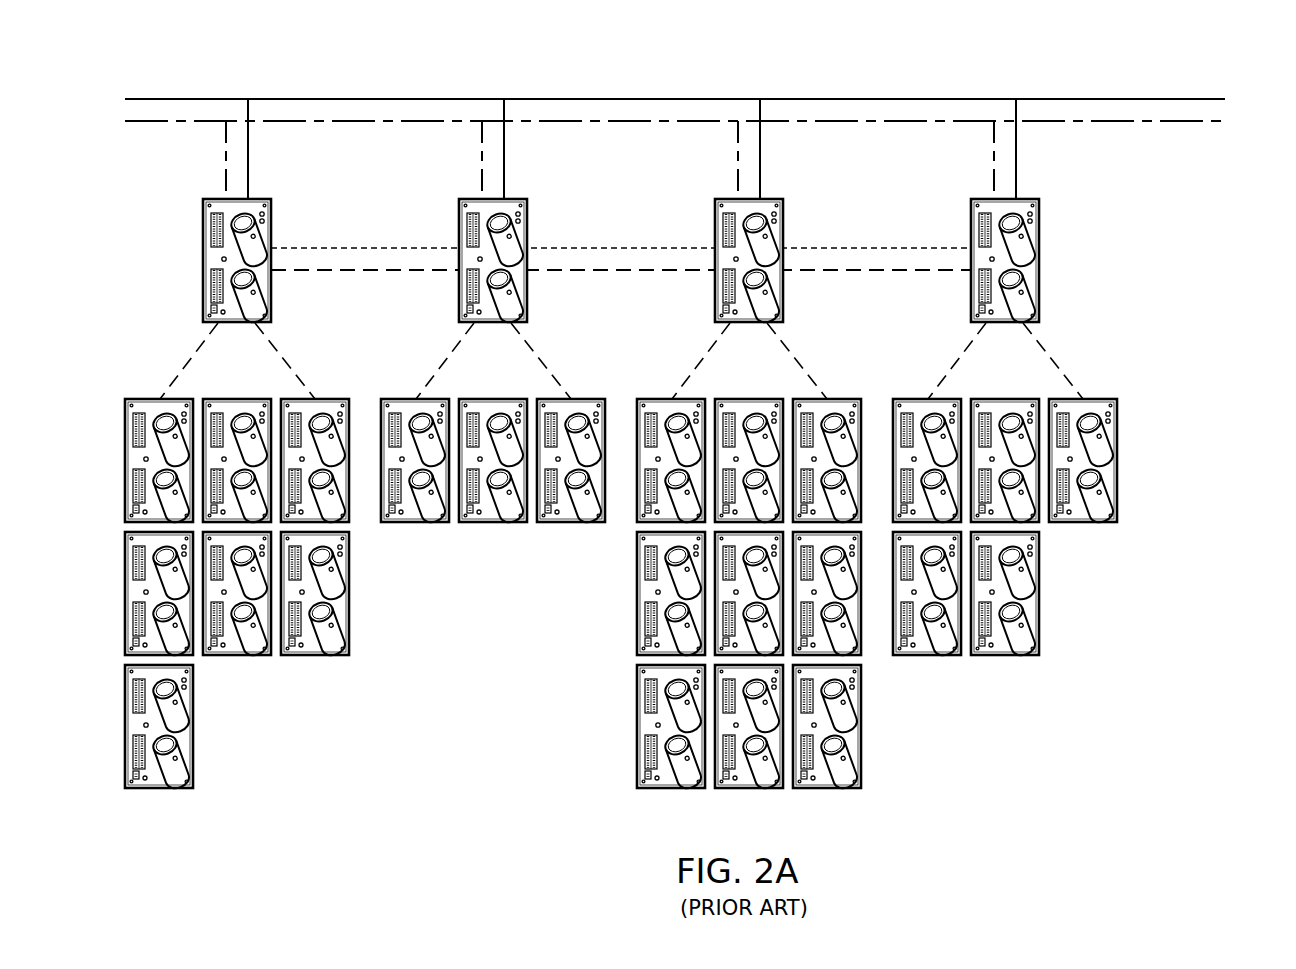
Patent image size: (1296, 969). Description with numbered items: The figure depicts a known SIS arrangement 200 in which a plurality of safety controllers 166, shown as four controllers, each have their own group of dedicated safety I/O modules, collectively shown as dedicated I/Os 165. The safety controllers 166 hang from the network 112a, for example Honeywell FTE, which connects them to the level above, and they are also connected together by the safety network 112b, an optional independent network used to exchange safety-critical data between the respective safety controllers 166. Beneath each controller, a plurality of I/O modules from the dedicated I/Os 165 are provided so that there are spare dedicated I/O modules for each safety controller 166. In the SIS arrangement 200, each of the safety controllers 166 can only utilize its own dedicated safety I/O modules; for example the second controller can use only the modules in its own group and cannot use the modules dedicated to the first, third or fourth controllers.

The SIS arrangement 200 is at (254, 49).
The network 112a is at (1149, 90).
The safety network 112b is at (352, 281).
The safety controllers 166 is at (1078, 252).
The dedicated I/Os 165 is at (1180, 603).